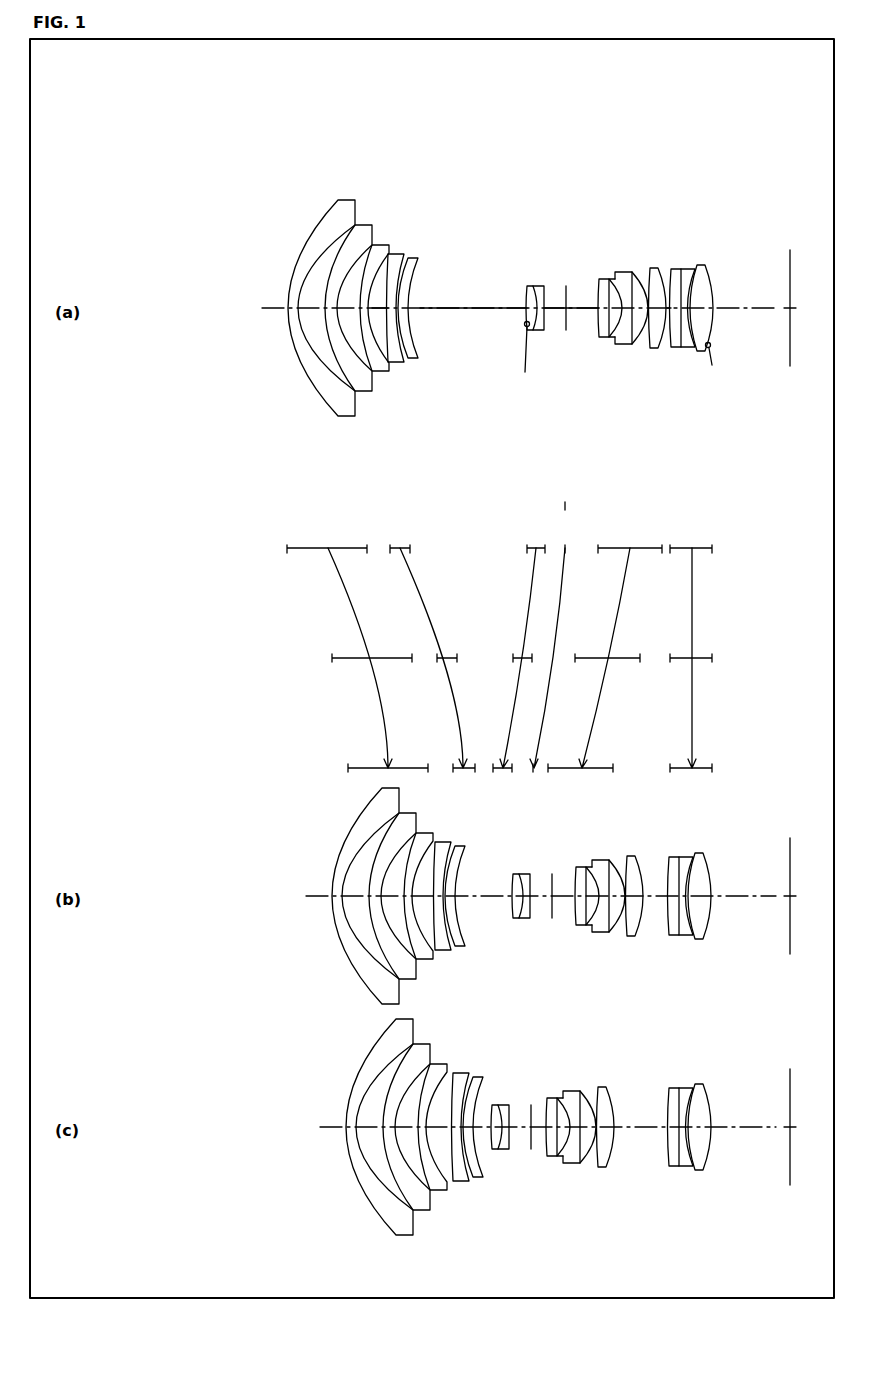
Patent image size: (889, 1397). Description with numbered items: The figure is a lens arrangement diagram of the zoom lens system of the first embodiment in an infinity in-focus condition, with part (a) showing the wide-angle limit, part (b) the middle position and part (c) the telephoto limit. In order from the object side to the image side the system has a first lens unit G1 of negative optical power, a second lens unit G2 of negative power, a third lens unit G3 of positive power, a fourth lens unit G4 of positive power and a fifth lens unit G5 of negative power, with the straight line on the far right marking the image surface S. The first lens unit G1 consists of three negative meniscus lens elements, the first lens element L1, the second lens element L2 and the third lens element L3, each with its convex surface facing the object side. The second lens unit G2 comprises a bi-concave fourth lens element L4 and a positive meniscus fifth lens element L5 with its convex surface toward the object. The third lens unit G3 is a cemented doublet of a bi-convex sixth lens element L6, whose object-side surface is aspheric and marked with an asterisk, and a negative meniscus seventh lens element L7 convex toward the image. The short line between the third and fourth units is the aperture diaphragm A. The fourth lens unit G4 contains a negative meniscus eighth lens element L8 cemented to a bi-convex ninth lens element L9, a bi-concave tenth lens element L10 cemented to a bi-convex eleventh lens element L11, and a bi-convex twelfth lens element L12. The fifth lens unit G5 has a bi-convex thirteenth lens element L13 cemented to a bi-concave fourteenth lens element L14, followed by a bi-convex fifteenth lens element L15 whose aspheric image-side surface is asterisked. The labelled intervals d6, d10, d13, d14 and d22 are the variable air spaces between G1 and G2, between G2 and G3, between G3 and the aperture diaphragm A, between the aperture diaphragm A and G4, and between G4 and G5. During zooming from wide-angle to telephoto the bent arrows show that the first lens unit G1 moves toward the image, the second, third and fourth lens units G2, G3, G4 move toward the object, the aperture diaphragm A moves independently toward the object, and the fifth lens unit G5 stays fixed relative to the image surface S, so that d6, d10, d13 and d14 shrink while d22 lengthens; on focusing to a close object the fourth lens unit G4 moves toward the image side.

The first lens element L1 is at (343, 208).
The second lens element L2 is at (360, 233).
The third lens element L3 is at (380, 253).
The fourth lens element L4 is at (398, 263).
The fifth lens element L5 is at (413, 263).
The sixth lens element L6 is at (530, 287).
The seventh lens element L7 is at (538, 287).
The aperture diaphragm A is at (564, 288).
The eighth lens element L8 is at (600, 280).
The ninth lens element L9 is at (608, 280).
The tenth lens element L10 is at (624, 273).
The eleventh lens element L11 is at (636, 273).
The twelfth lens element L12 is at (655, 270).
The thirteenth lens element L13 is at (676, 271).
The fourteenth lens element L14 is at (689, 271).
The fifteenth lens element L15 is at (708, 266).
The image surface S is at (791, 282).
The axial air space d6 is at (381, 314).
The axial air space d10 is at (469, 310).
The axial air space d13 is at (553, 310).
The axial air space d14 is at (582, 310).
The axial air space d22 is at (667, 308).
The first lens unit G1 is at (287, 502).
The second lens unit G2 is at (400, 510).
The third lens unit G3 is at (552, 524).
The fourth lens unit G4 is at (630, 510).
The fifth lens unit G5 is at (692, 510).